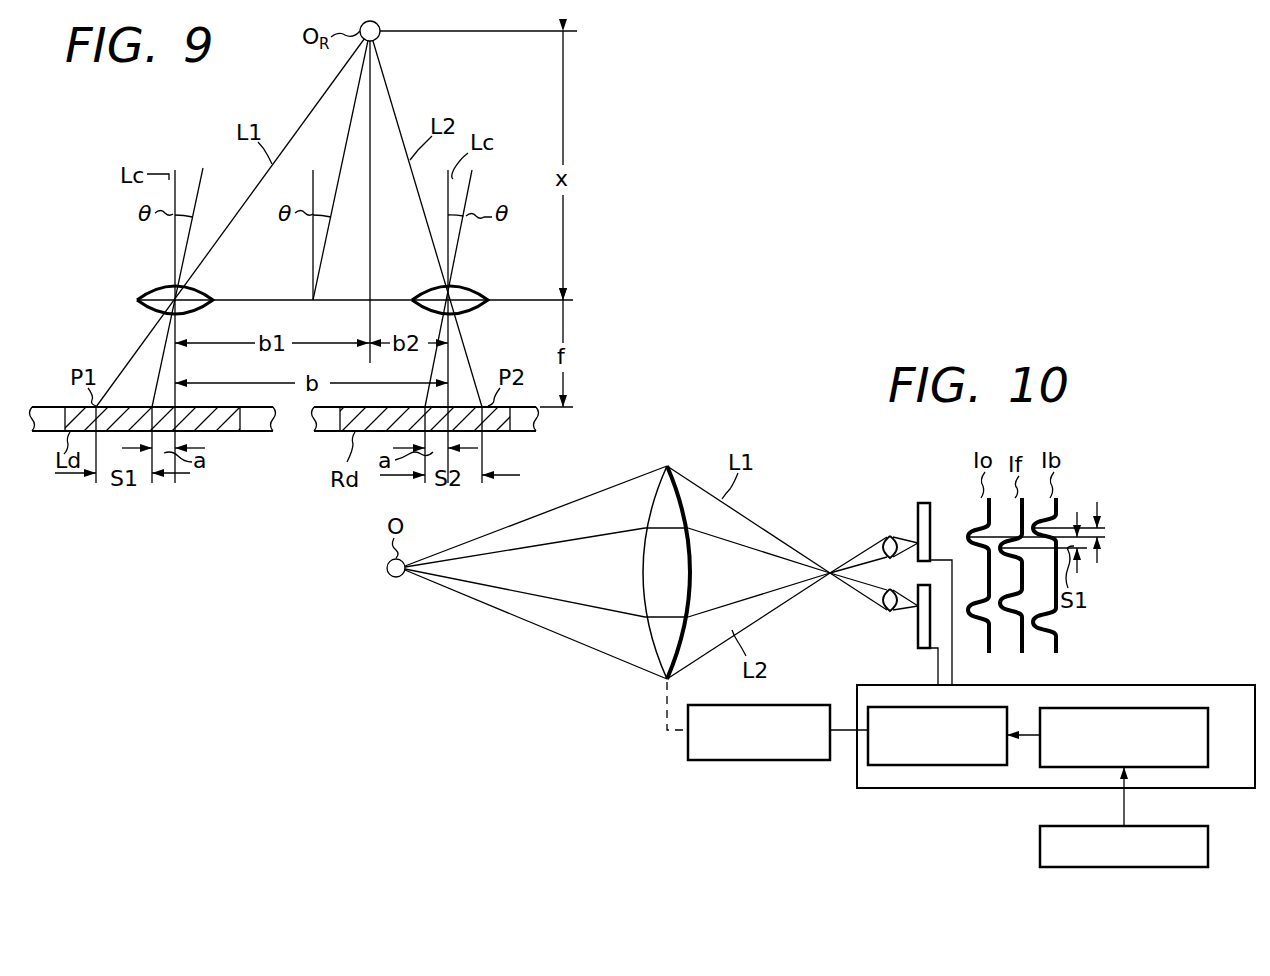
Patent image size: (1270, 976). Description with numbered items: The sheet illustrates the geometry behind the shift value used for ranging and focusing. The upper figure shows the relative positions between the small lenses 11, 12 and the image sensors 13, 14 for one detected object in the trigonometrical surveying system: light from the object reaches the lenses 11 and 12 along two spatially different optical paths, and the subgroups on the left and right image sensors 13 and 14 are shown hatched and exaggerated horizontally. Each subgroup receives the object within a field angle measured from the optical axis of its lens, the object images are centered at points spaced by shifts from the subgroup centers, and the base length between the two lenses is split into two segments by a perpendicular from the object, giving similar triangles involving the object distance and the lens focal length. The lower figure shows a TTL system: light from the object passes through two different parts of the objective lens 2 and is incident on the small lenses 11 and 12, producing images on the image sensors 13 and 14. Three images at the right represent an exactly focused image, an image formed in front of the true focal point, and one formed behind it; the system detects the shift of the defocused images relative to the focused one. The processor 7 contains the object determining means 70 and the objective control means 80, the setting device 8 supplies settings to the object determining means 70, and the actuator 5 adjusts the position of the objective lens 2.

In FIG. 10, the objective lens 2 is at (660, 652).
In FIG. 10, the actuator 5 is at (740, 762).
In FIG. 10, the processor 7 is at (1232, 684).
In FIG. 10, the setting device 8 is at (1208, 840).
In FIG. 9, the small lens 11 is at (146, 292).
In FIG. 10, the small lens 11 is at (886, 536).
In FIG. 9, the small lens 12 is at (472, 292).
In FIG. 10, the small lens 12 is at (886, 611).
In FIG. 9, the image sensor 13 is at (44, 433).
In FIG. 10, the image sensor 13 is at (925, 501).
In FIG. 9, the image sensor 14 is at (521, 433).
In FIG. 10, the image sensor 14 is at (914, 650).
In FIG. 10, the object determining means 70 is at (1047, 768).
In FIG. 10, the objective control means 80 is at (884, 766).